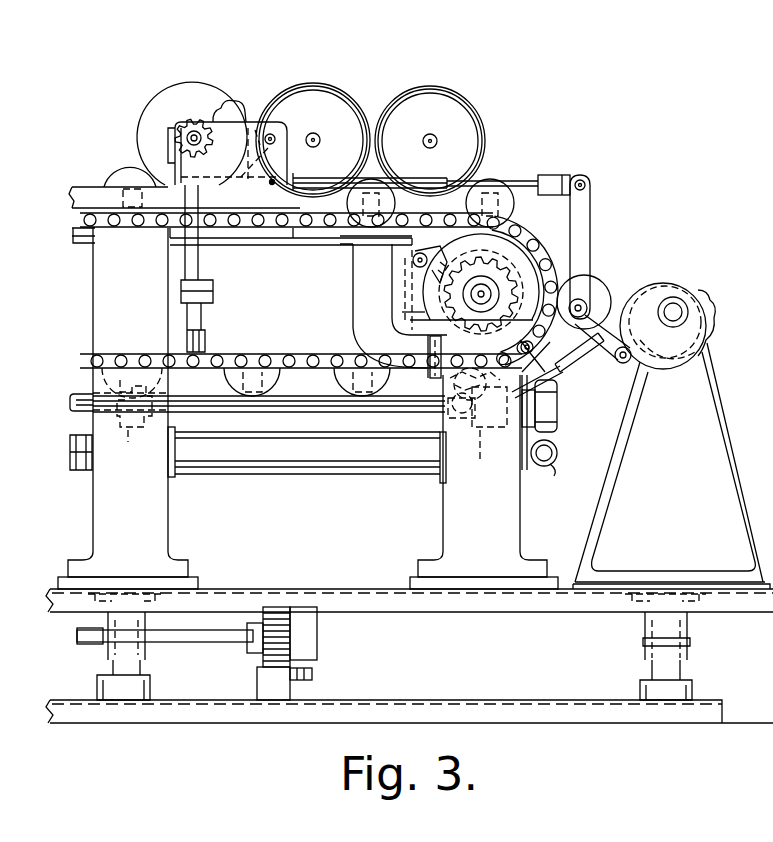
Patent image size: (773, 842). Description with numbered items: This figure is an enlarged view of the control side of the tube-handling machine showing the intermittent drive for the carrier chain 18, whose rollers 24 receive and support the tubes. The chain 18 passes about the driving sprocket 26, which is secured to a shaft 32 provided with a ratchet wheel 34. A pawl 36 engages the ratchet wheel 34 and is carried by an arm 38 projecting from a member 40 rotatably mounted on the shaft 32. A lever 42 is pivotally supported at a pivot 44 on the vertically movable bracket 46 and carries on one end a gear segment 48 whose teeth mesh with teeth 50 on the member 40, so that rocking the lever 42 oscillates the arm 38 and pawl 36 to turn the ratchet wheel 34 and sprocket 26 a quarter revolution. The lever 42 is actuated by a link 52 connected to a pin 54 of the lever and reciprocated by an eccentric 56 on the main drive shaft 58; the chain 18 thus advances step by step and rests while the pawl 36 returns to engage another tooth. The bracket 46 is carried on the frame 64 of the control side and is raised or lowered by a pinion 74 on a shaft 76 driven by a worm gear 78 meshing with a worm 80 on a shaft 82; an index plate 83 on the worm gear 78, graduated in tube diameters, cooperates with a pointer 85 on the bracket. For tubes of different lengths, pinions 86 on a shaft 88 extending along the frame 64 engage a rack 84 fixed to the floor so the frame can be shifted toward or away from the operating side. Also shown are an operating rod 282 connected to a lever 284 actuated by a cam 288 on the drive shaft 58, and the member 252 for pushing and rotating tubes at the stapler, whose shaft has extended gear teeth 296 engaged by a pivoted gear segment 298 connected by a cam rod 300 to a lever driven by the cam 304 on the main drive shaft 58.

The chain 18 is at (304, 231).
The rollers 24 is at (130, 170).
The driving sprocket 26 is at (410, 287).
The shaft 32 is at (474, 297).
The ratchet wheel 34 is at (521, 239).
The pawl 36 is at (414, 262).
The arm 38 is at (402, 309).
The member 40 is at (485, 266).
The lever 42 is at (430, 345).
The pivot 44 is at (452, 385).
The vertically movable bracket 46 is at (354, 311).
The gear segment 48 is at (505, 322).
The teeth 50 is at (540, 254).
The link 52 is at (540, 354).
The pin 54 is at (450, 413).
The eccentric 56 is at (657, 286).
The main drive shaft 58 is at (680, 312).
The frame 64 is at (520, 540).
The pinion 74 is at (282, 408).
The shaft 76 is at (318, 408).
The worm gear 78 is at (558, 425).
The worm 80 is at (555, 465).
The shaft 82 is at (558, 452).
The index plate 83 is at (558, 395).
The rack 84 is at (258, 688).
The pointer 85 is at (558, 380).
The pinion 86 is at (262, 660).
The shaft 88 is at (92, 644).
The member 252 is at (186, 84).
The operating rod 282 is at (520, 176).
The lever 284 is at (592, 228).
The cam 288 is at (677, 358).
The extended gear teeth 296 is at (180, 125).
The pivoted gear segment 298 is at (233, 110).
The cam rod 300 is at (414, 179).
The cam 304 is at (712, 321).